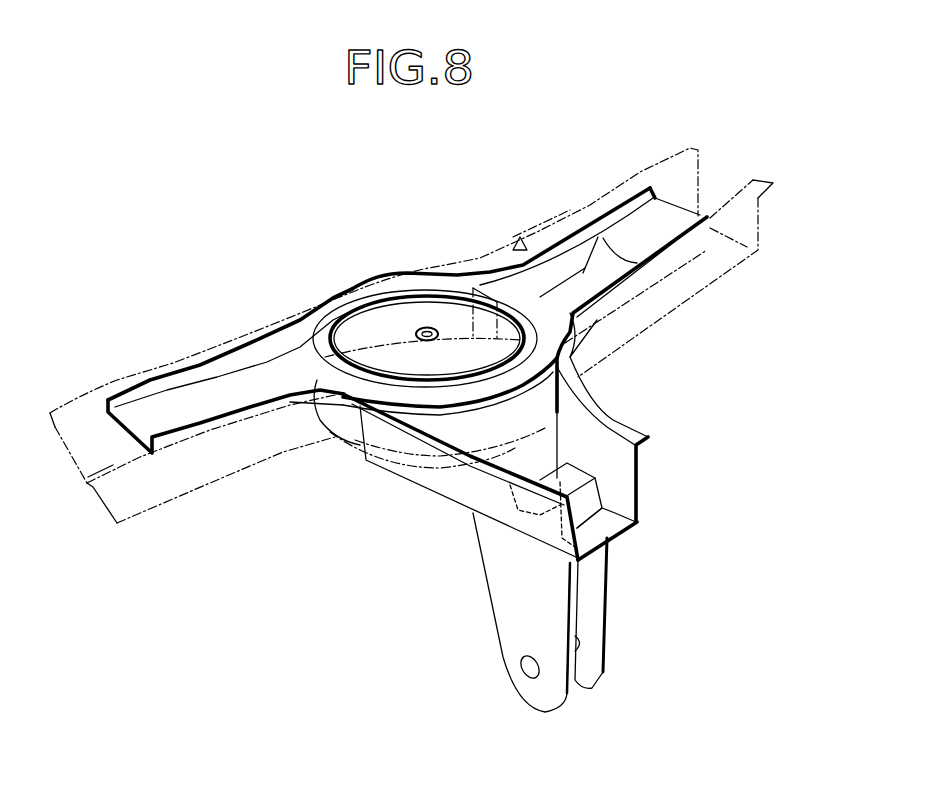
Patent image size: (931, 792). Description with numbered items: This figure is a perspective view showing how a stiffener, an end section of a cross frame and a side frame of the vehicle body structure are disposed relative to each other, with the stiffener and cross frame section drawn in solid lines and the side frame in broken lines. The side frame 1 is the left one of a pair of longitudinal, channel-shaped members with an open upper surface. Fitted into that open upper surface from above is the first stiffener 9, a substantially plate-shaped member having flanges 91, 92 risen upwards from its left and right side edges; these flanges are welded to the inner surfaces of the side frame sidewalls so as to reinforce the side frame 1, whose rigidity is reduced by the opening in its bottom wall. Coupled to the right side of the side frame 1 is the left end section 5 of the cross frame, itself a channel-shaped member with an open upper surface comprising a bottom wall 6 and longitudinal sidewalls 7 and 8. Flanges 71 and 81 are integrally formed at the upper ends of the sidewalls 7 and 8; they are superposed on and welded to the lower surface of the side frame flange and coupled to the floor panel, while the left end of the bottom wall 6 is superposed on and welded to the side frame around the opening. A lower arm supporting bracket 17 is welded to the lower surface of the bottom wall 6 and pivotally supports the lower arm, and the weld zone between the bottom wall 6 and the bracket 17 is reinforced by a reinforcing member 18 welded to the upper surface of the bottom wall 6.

The side frame 1 is at (590, 211).
The first stiffener 9 is at (391, 275).
The flange 91 is at (250, 348).
The flange 92 is at (249, 412).
The left end section of cross frame 5 is at (597, 388).
The flange 71 is at (613, 430).
The sidewall 7 is at (640, 465).
The reinforcing member 18 is at (596, 490).
The bottom wall 6 is at (620, 527).
The sidewall 8 is at (452, 483).
The flange 81 is at (510, 483).
The lower arm supporting bracket 17 is at (597, 633).